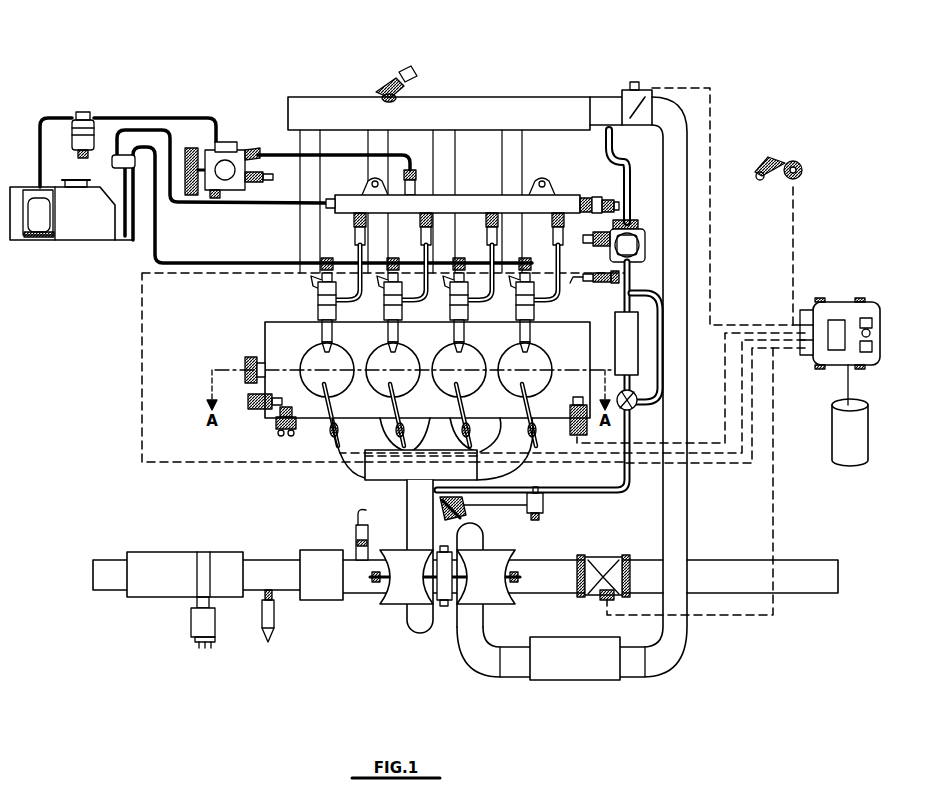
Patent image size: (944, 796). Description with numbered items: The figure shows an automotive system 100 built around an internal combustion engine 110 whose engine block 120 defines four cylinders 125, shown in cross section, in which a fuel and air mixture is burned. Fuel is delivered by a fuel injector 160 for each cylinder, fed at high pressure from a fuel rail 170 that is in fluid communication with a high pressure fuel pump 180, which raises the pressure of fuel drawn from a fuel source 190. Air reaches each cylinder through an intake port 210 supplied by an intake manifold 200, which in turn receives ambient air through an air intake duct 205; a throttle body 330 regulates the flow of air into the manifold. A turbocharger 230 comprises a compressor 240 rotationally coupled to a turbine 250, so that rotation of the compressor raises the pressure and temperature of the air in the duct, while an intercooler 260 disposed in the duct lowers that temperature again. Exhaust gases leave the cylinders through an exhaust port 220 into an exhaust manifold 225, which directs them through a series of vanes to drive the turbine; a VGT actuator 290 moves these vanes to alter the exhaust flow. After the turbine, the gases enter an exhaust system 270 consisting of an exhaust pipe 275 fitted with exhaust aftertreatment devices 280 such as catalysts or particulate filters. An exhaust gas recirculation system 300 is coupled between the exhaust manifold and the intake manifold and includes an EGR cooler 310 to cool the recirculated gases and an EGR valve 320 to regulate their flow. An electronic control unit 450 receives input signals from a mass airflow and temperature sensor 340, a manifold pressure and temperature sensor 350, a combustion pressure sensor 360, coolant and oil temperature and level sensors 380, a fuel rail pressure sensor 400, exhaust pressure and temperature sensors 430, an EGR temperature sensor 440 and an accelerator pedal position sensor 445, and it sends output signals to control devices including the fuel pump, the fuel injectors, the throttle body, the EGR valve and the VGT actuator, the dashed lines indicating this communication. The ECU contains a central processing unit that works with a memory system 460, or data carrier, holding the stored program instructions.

The automotive system 100 is at (202, 82).
The internal combustion engine 110 is at (540, 88).
The engine block 120 is at (265, 328).
The cylinder 125 is at (552, 345).
The fuel injector 160 is at (325, 305).
The fuel rail 170 is at (360, 209).
The high pressure fuel pump 180 is at (240, 145).
The fuel source 190 is at (88, 225).
The intake manifold 200 is at (448, 110).
The air intake duct 205 is at (690, 532).
The intake port 210 is at (310, 324).
The exhaust port 220 is at (322, 427).
The exhaust manifold 225 is at (340, 535).
The turbocharger 230 is at (410, 643).
The compressor 240 is at (473, 603).
The turbine 250 is at (415, 600).
The intercooler 260 is at (600, 665).
The exhaust system 270 is at (168, 543).
The exhaust pipe 275 is at (107, 577).
The exhaust aftertreatment device 280 is at (152, 578).
The VGT actuator 290 is at (458, 510).
The exhaust gas recirculation system 300 is at (597, 498).
The EGR cooler 310 is at (628, 358).
The EGR valve 320 is at (637, 218).
The throttle body 330 is at (637, 80).
The mass airflow and temperature sensor 340 is at (600, 597).
The manifold pressure and temperature sensor 350 is at (385, 85).
The combustion pressure sensor 360 is at (333, 460).
The coolant and oil temperature and level sensors 380 is at (283, 430).
The fuel rail pressure sensor 400 is at (612, 200).
The exhaust pressure and temperature sensors 430 is at (210, 648).
The EGR temperature sensor 440 is at (607, 278).
The accelerator pedal position sensor 445 is at (797, 160).
The electronic control unit 450 is at (845, 302).
The memory system 460 is at (850, 447).